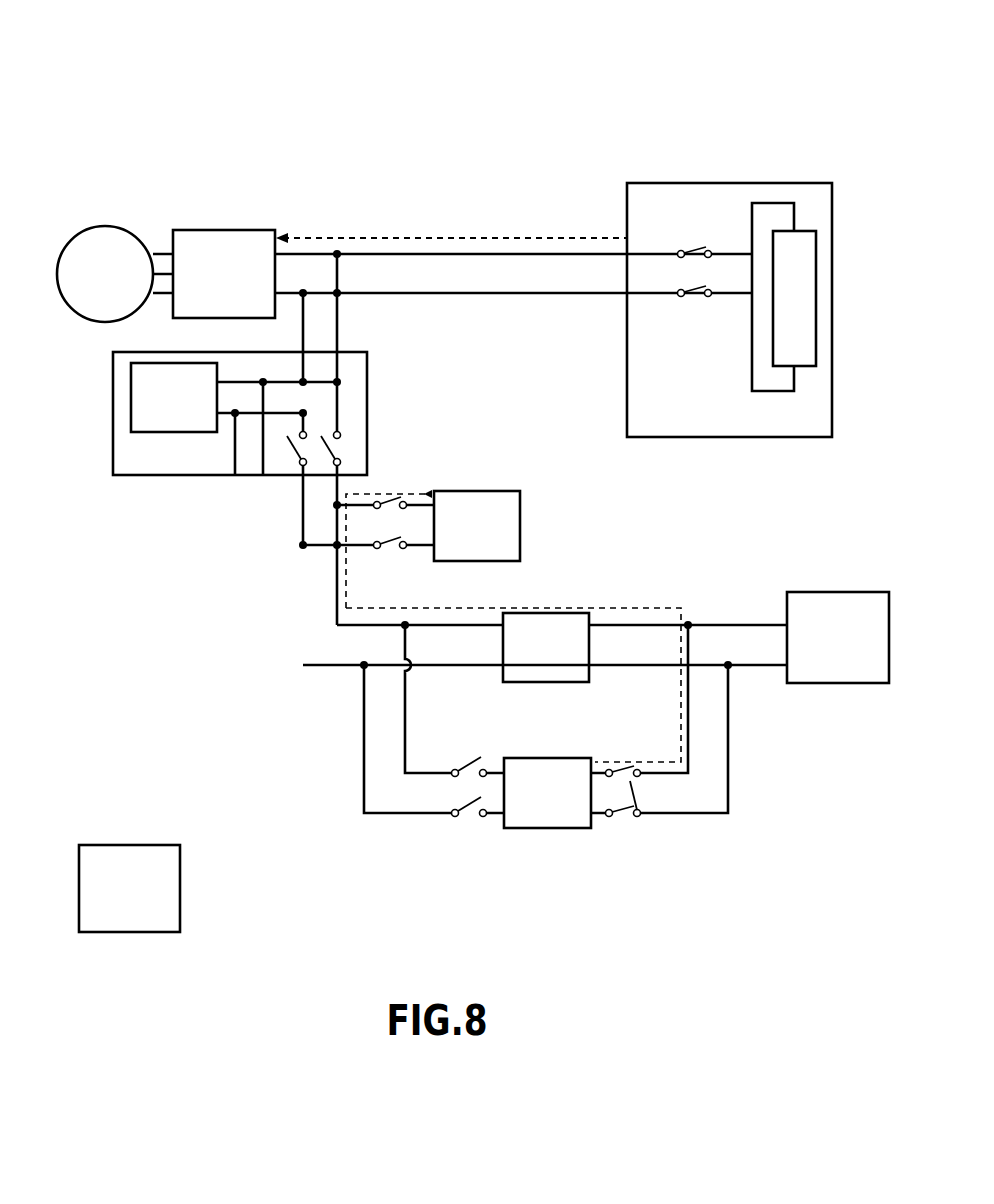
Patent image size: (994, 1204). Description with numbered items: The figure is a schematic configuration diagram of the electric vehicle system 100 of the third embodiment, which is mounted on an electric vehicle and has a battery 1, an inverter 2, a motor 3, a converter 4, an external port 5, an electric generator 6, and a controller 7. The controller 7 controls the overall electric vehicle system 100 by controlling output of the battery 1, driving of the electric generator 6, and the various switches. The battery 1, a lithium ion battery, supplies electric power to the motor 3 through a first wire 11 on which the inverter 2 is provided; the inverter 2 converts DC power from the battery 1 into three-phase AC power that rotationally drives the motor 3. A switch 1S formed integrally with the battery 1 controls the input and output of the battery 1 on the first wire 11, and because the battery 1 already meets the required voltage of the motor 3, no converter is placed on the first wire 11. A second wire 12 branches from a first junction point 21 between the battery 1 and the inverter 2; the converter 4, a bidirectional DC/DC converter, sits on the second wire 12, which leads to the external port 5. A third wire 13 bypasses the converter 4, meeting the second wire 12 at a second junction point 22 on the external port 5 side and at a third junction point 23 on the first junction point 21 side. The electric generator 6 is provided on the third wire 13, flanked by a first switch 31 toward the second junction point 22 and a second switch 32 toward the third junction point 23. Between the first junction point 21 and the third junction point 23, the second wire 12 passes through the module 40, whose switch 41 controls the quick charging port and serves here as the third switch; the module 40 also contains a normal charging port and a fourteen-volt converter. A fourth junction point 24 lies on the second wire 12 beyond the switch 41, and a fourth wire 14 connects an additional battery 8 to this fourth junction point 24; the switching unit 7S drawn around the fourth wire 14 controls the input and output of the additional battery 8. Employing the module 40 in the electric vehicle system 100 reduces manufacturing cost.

The electric vehicle system 100 is at (612, 100).
The battery 1 is at (745, 183).
The switch 1S is at (690, 236).
The inverter 2 is at (240, 230).
The motor 3 is at (112, 226).
The converter 4 is at (547, 613).
The external port 5 is at (823, 592).
The electric generator 6 is at (530, 758).
The controller 7 is at (122, 845).
The switching unit 7S is at (405, 490).
The additional battery 8 is at (465, 491).
The first wire 11 is at (493, 254).
The second wire 12 is at (338, 318).
The third wire 13 is at (690, 708).
The fourth wire 14 is at (360, 500).
The first junction point 21 is at (338, 254).
The second junction point 22 is at (690, 625).
The third junction point 23 is at (404, 621).
The fourth junction point 24 is at (336, 512).
The first switch 31 is at (637, 815).
The second switch 32 is at (468, 777).
The module 40 is at (132, 497).
The switch 41 is at (332, 482).